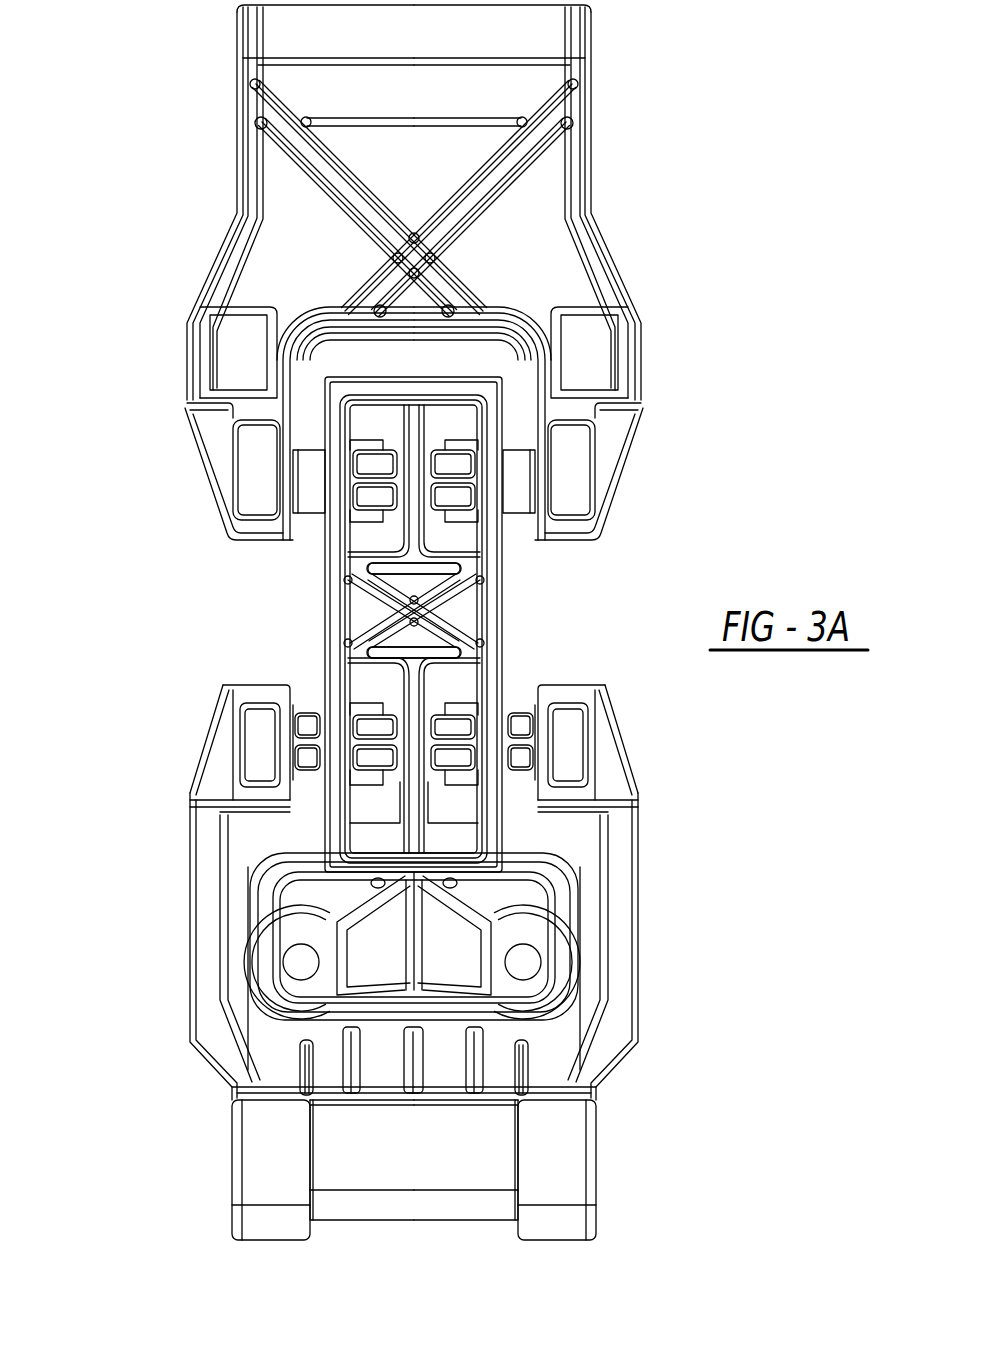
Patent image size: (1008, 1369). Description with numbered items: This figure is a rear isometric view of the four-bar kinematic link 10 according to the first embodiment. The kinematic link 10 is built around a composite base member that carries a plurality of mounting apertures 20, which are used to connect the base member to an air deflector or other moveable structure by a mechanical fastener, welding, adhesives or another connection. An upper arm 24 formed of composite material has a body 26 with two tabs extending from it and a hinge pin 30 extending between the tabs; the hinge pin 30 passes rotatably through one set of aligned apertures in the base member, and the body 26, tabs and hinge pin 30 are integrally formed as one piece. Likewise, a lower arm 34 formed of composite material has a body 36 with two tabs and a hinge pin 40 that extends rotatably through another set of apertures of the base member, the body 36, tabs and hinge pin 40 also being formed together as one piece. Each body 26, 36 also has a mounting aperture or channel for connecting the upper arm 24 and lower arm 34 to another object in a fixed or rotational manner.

The 4-bar kinematic link 10 is at (391, 640).
The mounting apertures 20 is at (282, 964).
The upper arm 24 is at (628, 89).
The body 26 is at (396, 166).
The hinge pin 30 is at (457, 497).
The lower arm 34 is at (136, 1028).
The body 36 is at (410, 1140).
The hinge pin 40 is at (368, 725).